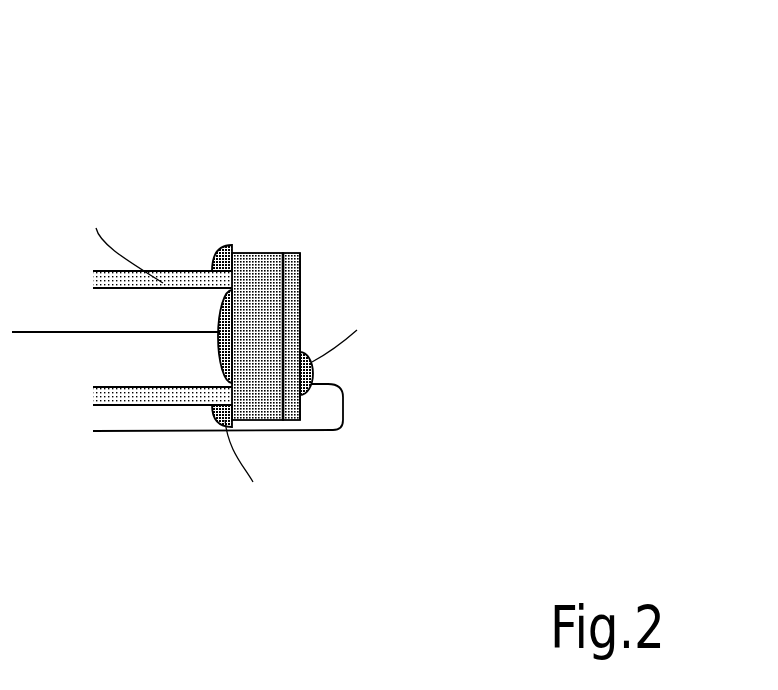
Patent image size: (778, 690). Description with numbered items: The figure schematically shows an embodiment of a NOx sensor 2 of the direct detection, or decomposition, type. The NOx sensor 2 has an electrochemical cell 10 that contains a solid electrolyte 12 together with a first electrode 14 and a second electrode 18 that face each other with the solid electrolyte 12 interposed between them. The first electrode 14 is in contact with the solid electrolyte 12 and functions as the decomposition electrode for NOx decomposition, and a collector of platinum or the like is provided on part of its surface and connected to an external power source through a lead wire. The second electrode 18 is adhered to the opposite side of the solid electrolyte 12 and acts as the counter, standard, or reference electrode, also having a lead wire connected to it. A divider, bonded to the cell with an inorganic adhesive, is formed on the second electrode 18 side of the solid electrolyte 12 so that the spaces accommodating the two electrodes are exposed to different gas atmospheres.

The electrochemical cell 10 is at (345, 127).
The NOx sensor 2 is at (347, 183).
The solid electrolyte 12 is at (262, 288).
The first electrode 14 is at (289, 308).
The second electrode 18 is at (218, 328).